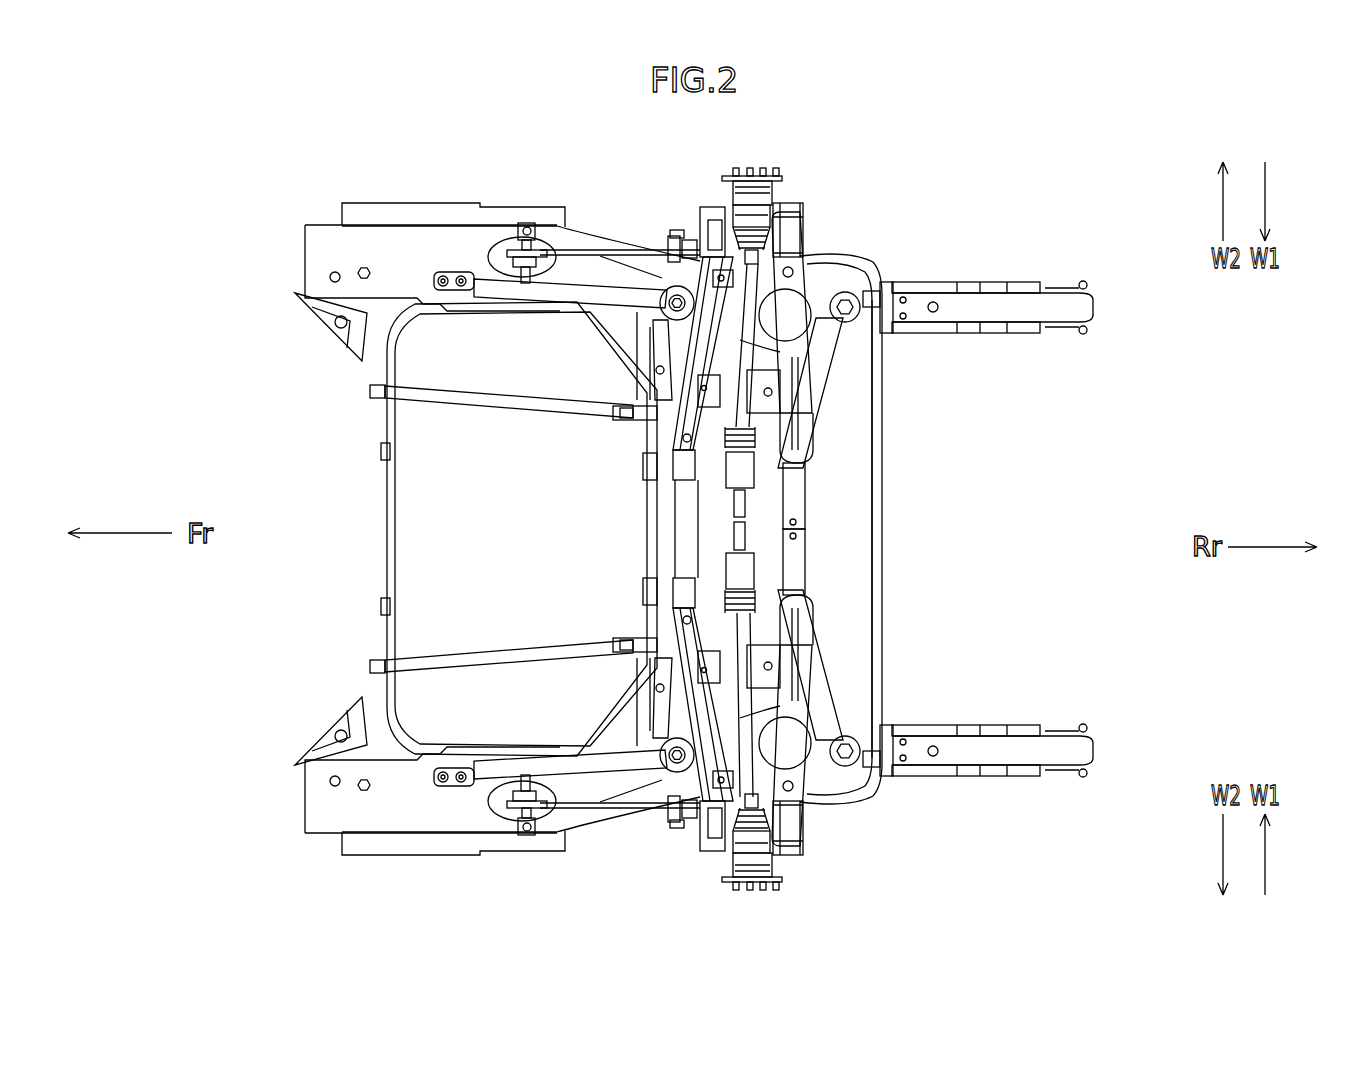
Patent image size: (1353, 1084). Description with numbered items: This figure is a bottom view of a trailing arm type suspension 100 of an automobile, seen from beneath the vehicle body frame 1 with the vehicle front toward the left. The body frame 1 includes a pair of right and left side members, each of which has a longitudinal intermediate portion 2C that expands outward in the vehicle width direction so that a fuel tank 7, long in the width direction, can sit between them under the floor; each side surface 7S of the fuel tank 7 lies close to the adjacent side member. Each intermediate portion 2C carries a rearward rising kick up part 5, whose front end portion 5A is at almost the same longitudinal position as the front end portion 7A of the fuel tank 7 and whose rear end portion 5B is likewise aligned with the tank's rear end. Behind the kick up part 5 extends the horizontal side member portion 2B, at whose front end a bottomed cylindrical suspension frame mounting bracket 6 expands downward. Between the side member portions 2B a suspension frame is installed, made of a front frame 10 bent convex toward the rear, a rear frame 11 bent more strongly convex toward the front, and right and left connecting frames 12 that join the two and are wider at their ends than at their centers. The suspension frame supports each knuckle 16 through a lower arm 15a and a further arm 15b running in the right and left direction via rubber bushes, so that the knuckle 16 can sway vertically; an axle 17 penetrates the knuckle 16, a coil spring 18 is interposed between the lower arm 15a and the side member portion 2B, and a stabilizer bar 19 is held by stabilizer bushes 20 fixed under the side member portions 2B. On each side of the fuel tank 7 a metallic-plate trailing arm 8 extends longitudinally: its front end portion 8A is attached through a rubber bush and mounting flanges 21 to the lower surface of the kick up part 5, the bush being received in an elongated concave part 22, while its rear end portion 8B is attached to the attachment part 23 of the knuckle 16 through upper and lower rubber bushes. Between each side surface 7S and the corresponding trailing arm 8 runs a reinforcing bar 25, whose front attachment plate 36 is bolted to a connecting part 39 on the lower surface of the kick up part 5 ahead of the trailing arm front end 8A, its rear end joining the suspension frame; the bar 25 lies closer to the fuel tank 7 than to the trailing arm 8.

The trailing arm type suspension 100 is at (944, 571).
The longitudinal intermediate portion 2C is at (315, 235).
The side member portion 2B is at (987, 298).
The vehicle body frame 1 is at (360, 228).
The kick up part 5 is at (421, 227).
The front end portion of kick up part 5A is at (383, 230).
The rear end portion of kick up part 5B is at (620, 273).
The front attachment plate 36 is at (448, 272).
The connecting part 39 is at (453, 293).
The concave part 22 is at (508, 243).
The mounting flange 21 is at (523, 223).
The trailing arm 8 is at (607, 230).
The front end portion of trailing arm 8A is at (547, 250).
The rear end portion of trailing arm 8B is at (655, 262).
The attachment part 23 is at (683, 218).
The side surface of fuel tank 7S is at (487, 310).
The reinforcing bar 25 is at (565, 290).
The suspension frame mounting bracket 6 is at (688, 287).
The fuel tank 7 is at (400, 627).
The front end portion of fuel tank 7A is at (403, 688).
The front frame 10 is at (690, 557).
The rear frame 11 is at (823, 398).
The connecting frame 12 is at (768, 408).
The lower arm 15a is at (797, 282).
The arm 15b is at (717, 230).
The knuckle 16 is at (783, 205).
The axle 17 is at (750, 345).
The coil spring 18 is at (813, 297).
The stabilizer bar 19 is at (882, 507).
The stabilizer bush 20 is at (873, 300).